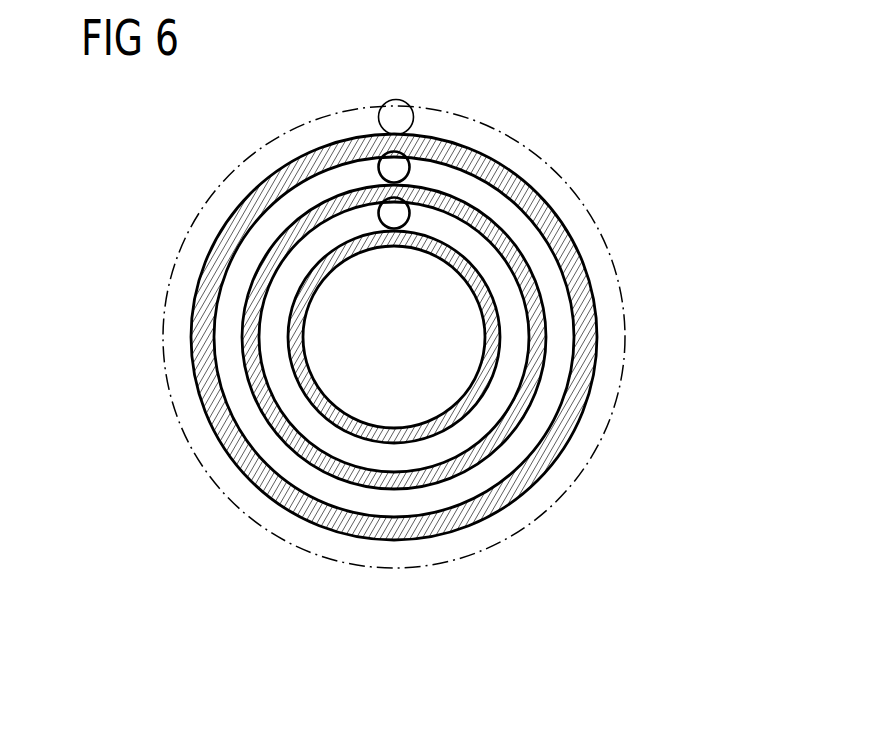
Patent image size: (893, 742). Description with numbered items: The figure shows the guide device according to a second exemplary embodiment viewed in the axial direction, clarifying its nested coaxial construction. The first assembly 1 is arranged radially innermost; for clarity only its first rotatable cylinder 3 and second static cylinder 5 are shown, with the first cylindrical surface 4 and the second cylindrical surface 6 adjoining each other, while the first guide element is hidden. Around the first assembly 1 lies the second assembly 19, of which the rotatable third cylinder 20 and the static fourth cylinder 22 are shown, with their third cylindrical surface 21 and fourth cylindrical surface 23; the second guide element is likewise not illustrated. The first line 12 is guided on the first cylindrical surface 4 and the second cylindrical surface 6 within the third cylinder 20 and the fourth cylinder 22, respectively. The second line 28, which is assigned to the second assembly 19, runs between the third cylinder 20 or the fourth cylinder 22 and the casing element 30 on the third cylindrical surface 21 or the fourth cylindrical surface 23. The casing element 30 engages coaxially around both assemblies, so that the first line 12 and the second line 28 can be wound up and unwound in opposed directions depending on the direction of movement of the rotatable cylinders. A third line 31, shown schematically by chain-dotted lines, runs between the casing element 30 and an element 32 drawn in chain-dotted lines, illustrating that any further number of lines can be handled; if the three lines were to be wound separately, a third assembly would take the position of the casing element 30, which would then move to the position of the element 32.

The first assembly 1 is at (285, 358).
The first rotatable cylinder 3 is at (293, 333).
The second static cylinder 5 is at (292, 337).
The first cylindrical surface 4 is at (293, 303).
The second cylindrical surface 6 is at (394, 337).
The first line 12 is at (388, 215).
The second assembly 19 is at (545, 380).
The third cylinder 20 is at (542, 345).
The fourth cylinder 22 is at (478, 337).
The third cylindrical surface 21 is at (540, 288).
The fourth cylindrical surface 23 is at (465, 337).
The second line 28 is at (388, 167).
The casing element 30 is at (553, 447).
The third line 31 is at (394, 112).
The element 32 is at (512, 134).